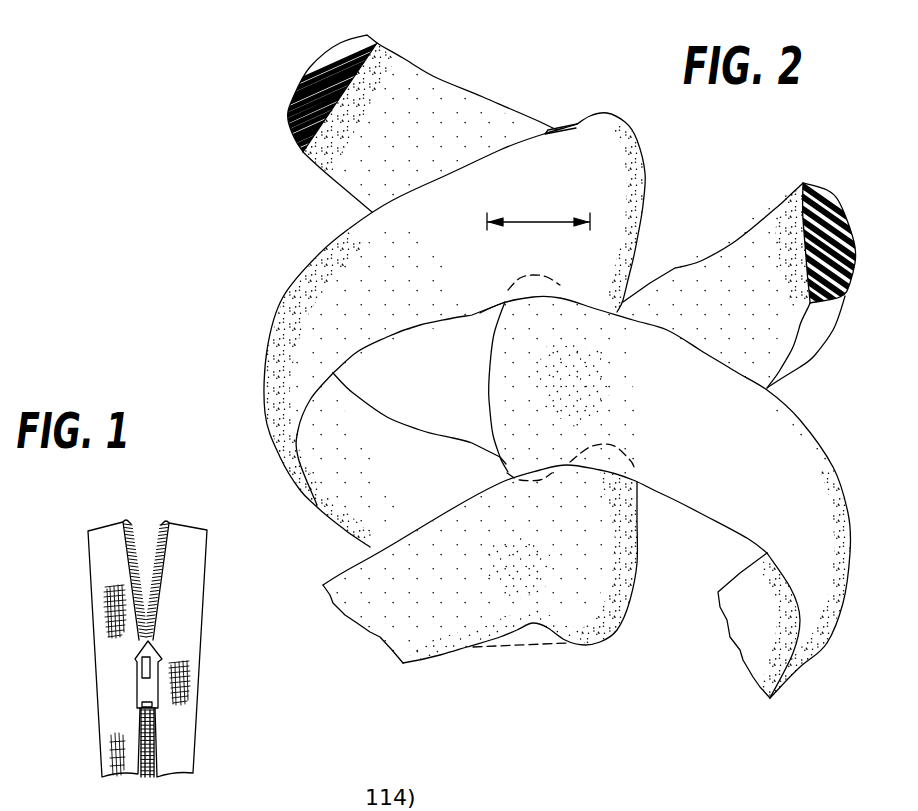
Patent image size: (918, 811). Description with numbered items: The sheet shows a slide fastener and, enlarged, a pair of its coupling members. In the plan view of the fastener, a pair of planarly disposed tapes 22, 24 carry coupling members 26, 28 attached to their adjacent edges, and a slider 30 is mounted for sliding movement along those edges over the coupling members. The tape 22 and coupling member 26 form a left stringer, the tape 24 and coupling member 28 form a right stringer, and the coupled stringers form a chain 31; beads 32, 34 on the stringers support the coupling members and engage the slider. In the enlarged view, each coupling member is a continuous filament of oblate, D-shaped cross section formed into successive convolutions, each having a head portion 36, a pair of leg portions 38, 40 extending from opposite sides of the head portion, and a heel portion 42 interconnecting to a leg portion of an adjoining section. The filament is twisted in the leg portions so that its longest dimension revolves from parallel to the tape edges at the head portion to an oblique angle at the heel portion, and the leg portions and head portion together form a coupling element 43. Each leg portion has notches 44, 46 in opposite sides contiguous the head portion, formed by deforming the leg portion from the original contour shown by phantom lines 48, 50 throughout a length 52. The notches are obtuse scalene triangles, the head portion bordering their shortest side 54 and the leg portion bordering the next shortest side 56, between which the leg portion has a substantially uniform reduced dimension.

In FIG. 1, the tape 22 is at (107, 545).
In FIG. 1, the tape 24 is at (188, 575).
In FIG. 1, the coupling member 26 is at (135, 536).
In FIG. 2, the coupling member 26 is at (450, 72).
In FIG. 1, the coupling member 28 is at (153, 529).
In FIG. 2, the coupling member 28 is at (721, 196).
In FIG. 1, the slider 30 is at (158, 652).
In FIG. 1, the chain 31 is at (199, 748).
In FIG. 1, the bead 32 is at (126, 572).
In FIG. 1, the bead 34 is at (161, 604).
In FIG. 2, the head portion 36 is at (629, 197).
In FIG. 2, the leg portion 38 is at (455, 192).
In FIG. 2, the leg portion 40 is at (482, 113).
In FIG. 2, the heel portion 42 is at (287, 337).
In FIG. 2, the coupling element 43 is at (596, 665).
In FIG. 2, the notch 44 is at (566, 127).
In FIG. 2, the notch 46 is at (533, 626).
In FIG. 2, the phantom line 48 is at (573, 111).
In FIG. 2, the phantom line 50 is at (533, 647).
In FIG. 2, the length 52 is at (530, 219).
In FIG. 2, the shortest side 54 is at (580, 118).
In FIG. 2, the next shortest side 56 is at (551, 134).